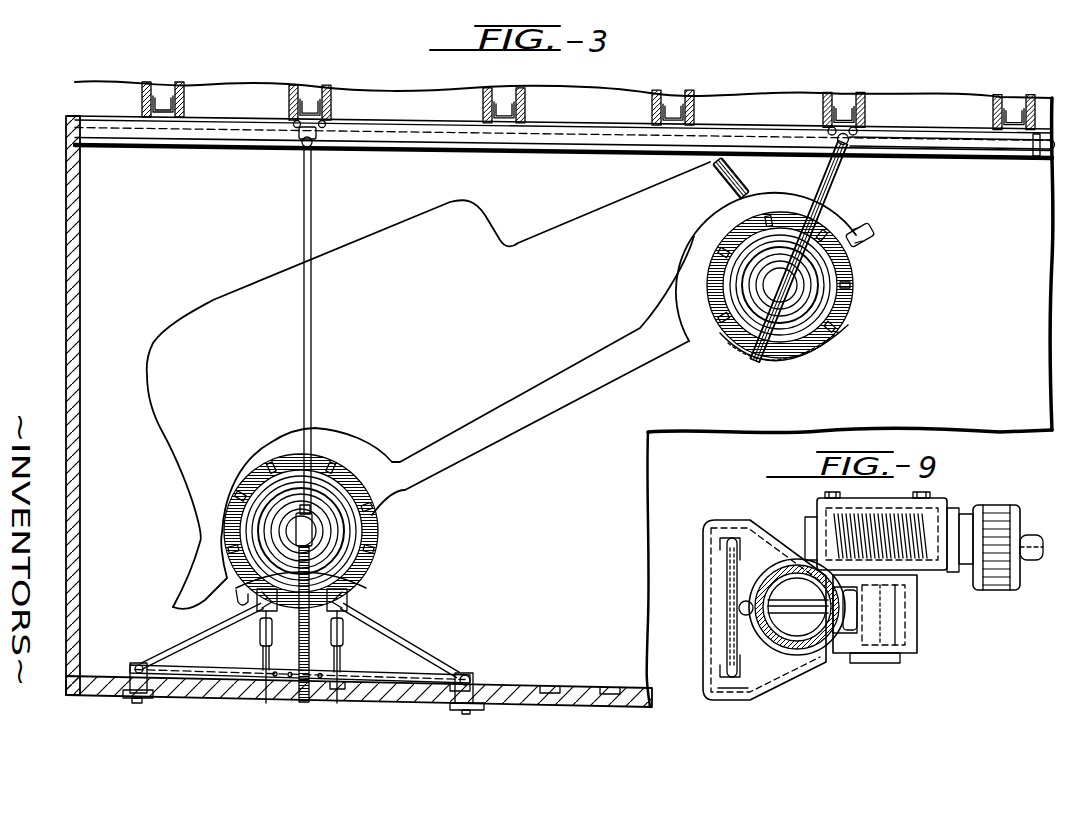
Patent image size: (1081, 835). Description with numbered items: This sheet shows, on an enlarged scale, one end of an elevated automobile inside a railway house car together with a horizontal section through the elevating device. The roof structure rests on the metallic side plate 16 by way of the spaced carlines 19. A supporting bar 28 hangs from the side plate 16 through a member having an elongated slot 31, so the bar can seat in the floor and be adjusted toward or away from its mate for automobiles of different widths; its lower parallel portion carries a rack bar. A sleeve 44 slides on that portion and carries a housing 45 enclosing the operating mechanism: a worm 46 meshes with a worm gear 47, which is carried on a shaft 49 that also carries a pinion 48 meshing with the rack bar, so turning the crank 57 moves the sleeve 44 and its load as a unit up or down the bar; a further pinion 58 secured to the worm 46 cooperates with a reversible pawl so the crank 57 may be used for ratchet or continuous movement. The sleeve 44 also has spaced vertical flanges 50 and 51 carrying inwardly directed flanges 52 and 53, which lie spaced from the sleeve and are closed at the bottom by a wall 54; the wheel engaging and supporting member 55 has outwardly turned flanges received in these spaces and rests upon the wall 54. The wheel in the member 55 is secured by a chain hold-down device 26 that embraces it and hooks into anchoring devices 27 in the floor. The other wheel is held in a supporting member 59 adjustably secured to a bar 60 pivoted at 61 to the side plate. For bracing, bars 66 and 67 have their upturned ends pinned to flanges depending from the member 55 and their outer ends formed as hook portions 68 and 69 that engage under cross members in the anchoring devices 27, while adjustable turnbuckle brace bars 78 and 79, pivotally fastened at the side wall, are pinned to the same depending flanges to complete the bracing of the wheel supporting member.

In FIG. 3, the side plate 16 is at (505, 150).
In FIG. 3, the carlines 19 is at (653, 116).
In FIG. 3, the chain hold-down devices 26 is at (376, 543).
In FIG. 3, the anchoring devices 27 is at (157, 697).
In FIG. 3, the supporting bar 28 is at (312, 381).
In FIG. 3, the elongated slot 31 is at (300, 150).
In FIG. 3, the wheel engaging and supporting member 55 is at (347, 584).
In FIG. 3, the supporting members 59 is at (777, 354).
In FIG. 3, the bars 60 is at (943, 143).
In FIG. 3, the pivot 61 is at (853, 153).
In FIG. 3, the bar 66 is at (187, 645).
In FIG. 3, the bar 67 is at (417, 648).
In FIG. 3, the hook portion 68 is at (133, 667).
In FIG. 3, the hook portion 69 is at (475, 680).
In FIG. 3, the brace bar 78 is at (262, 654).
In FIG. 3, the brace bar 79 is at (344, 658).
In FIG. 9, the sleeve 44 is at (810, 652).
In FIG. 9, the housing 45 is at (912, 585).
In FIG. 9, the worm 46 is at (887, 523).
In FIG. 9, the worm gear 47 is at (830, 542).
In FIG. 9, the pinion 48 is at (902, 618).
In FIG. 9, the shaft 49 is at (890, 582).
In FIG. 9, the vertical flange 50 is at (732, 537).
In FIG. 9, the vertical flange 51 is at (731, 684).
In FIG. 9, the inwardly directed flange 52 is at (721, 553).
In FIG. 9, the inwardly directed flange 53 is at (721, 668).
In FIG. 9, the wall 54 is at (722, 605).
In FIG. 9, the crank 57 is at (1027, 556).
In FIG. 9, the pinion 58 is at (995, 510).